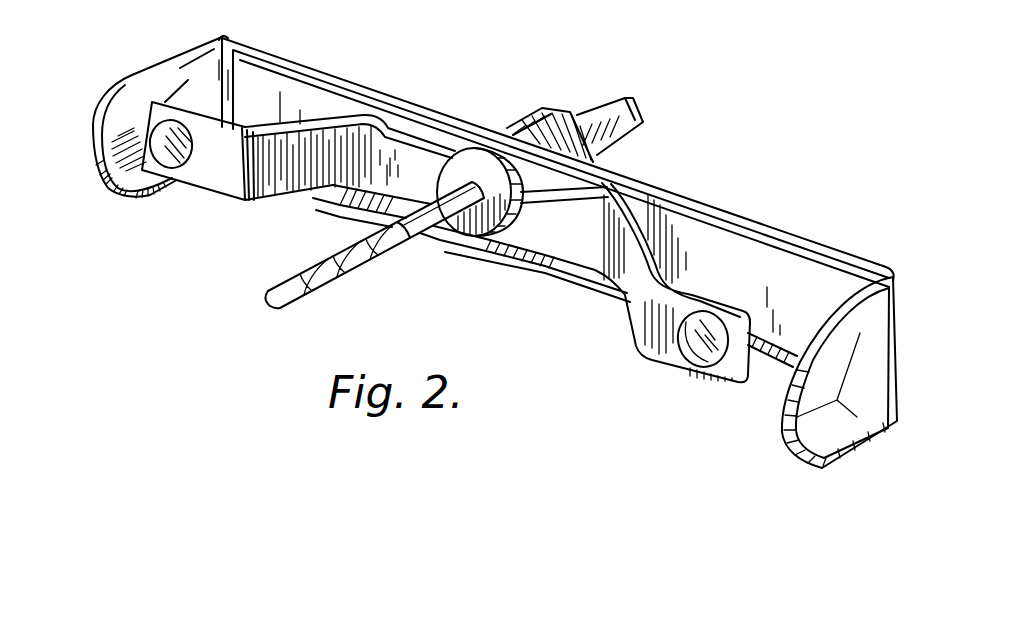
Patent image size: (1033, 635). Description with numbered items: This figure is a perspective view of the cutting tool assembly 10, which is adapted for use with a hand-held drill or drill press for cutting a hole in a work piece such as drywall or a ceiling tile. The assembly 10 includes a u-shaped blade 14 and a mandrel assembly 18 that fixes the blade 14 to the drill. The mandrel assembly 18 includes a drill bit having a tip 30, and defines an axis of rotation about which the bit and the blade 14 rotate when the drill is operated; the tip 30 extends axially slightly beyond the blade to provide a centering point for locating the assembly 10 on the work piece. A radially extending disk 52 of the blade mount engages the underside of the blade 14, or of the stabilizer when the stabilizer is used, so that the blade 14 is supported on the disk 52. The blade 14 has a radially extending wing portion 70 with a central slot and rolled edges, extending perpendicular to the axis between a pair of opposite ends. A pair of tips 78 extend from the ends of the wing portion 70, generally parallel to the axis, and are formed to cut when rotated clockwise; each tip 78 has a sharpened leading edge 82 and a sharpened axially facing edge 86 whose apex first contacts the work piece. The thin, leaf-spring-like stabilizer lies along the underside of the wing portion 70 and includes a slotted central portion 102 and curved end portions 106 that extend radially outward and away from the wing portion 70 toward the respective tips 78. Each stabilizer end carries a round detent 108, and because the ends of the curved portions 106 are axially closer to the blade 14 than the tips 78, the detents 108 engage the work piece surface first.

The cutting tool assembly 10 is at (735, 165).
The u-shaped blade 14 is at (313, 93).
The mandrel assembly 18 is at (579, 70).
The tip 30 is at (292, 298).
The radially extending disk 52 is at (481, 236).
The wing portion 70 is at (753, 277).
The tips 78 is at (155, 80).
The leading edge 82 is at (120, 197).
The axially facing edge 86 is at (100, 162).
The central portion 102 is at (548, 230).
The curved end portions 106 is at (277, 182).
The round detent 108 is at (191, 167).